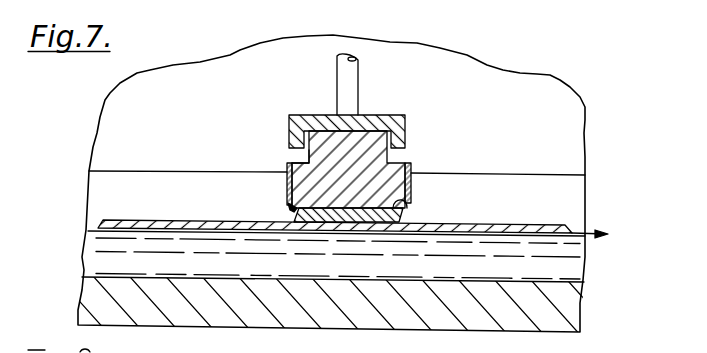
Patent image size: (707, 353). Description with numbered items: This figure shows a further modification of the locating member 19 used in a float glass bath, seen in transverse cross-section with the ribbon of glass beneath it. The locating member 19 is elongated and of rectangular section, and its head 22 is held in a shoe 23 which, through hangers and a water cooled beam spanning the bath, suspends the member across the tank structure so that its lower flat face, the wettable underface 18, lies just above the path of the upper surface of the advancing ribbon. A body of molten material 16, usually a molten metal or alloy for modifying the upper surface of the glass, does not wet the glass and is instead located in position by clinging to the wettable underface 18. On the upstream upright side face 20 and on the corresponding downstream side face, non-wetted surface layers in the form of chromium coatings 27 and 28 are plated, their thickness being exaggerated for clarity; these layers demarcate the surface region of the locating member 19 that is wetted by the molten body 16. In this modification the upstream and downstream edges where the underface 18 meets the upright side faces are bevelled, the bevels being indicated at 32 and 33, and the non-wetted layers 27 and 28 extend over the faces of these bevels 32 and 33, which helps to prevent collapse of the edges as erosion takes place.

The body of molten material 16 is at (348, 212).
The underface 18 is at (412, 193).
The locating member 19 is at (358, 193).
The upright side face 20 is at (296, 172).
The head 22 is at (351, 134).
The shoe 23 is at (405, 120).
The coating 27 is at (288, 181).
The coating 28 is at (411, 177).
The bevel 32 is at (295, 209).
The bevel 33 is at (408, 207).